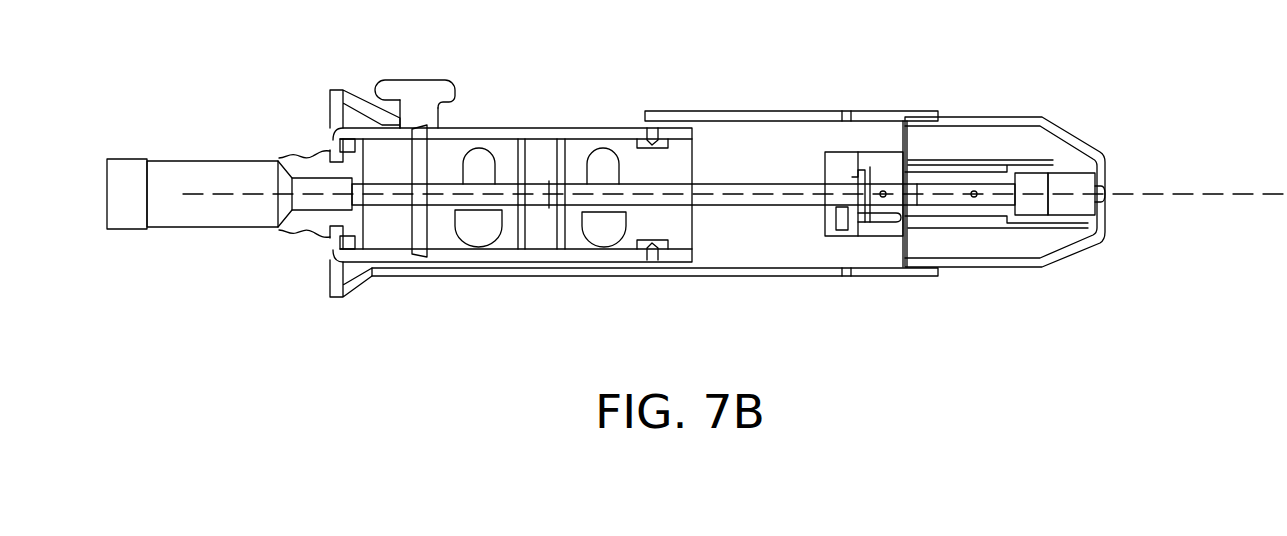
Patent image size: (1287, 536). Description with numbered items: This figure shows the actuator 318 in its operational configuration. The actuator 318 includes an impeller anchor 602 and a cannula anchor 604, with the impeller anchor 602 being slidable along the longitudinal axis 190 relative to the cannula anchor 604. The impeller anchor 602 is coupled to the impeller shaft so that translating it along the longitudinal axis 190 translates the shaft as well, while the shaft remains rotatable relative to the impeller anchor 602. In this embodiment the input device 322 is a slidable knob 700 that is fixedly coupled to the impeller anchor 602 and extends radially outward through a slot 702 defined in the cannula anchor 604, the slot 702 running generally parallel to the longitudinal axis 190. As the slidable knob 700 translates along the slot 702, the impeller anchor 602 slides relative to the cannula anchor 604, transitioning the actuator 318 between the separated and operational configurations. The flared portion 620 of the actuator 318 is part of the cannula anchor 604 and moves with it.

The longitudinal axis 190 is at (1157, 192).
The impeller anchor 602 is at (330, 250).
The flared portion 620 is at (353, 97).
The slot 702 is at (566, 92).
The slidable knob 700 is at (419, 80).
The input device 322 is at (447, 80).
The actuator 318 is at (724, 78).
The cannula anchor 604 is at (990, 268).